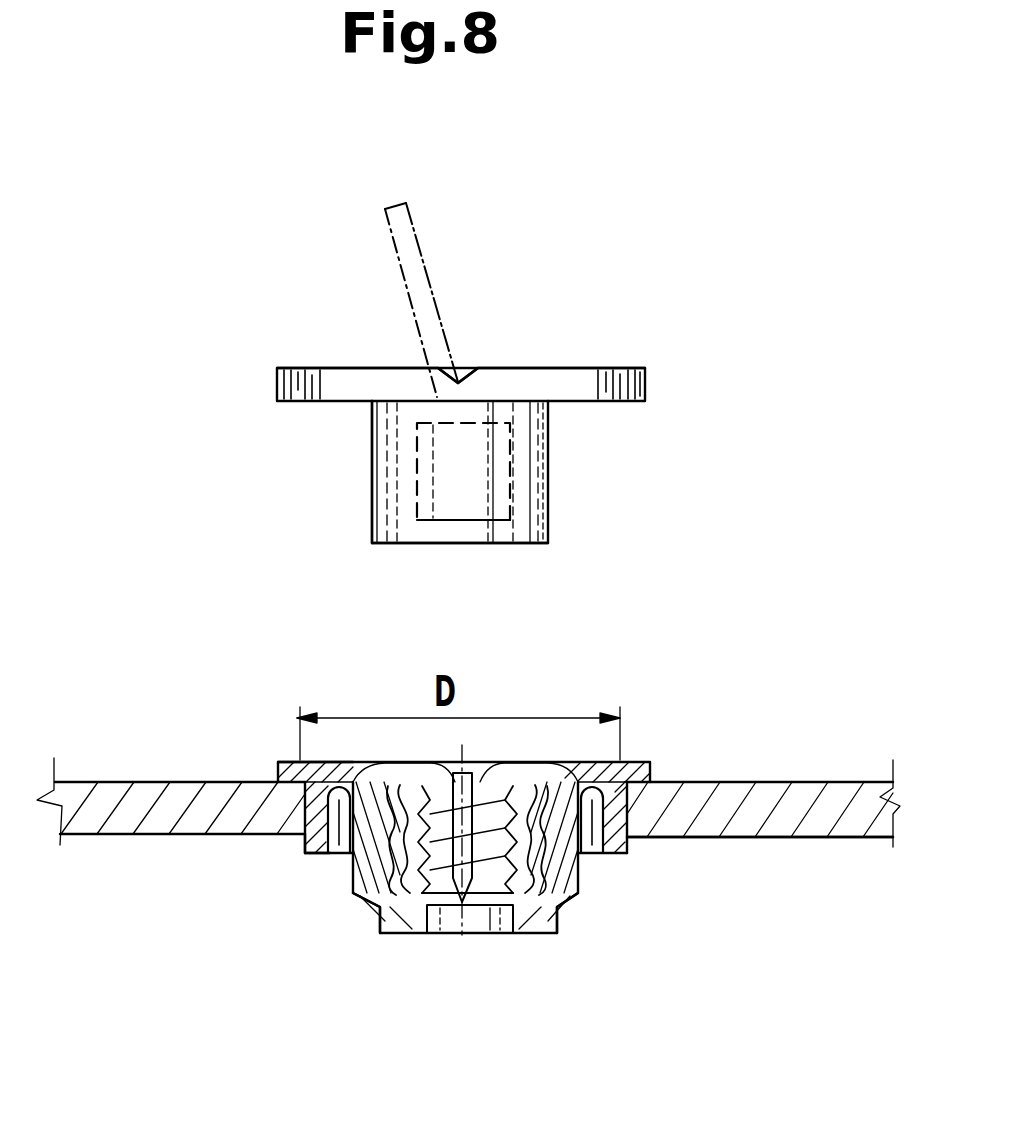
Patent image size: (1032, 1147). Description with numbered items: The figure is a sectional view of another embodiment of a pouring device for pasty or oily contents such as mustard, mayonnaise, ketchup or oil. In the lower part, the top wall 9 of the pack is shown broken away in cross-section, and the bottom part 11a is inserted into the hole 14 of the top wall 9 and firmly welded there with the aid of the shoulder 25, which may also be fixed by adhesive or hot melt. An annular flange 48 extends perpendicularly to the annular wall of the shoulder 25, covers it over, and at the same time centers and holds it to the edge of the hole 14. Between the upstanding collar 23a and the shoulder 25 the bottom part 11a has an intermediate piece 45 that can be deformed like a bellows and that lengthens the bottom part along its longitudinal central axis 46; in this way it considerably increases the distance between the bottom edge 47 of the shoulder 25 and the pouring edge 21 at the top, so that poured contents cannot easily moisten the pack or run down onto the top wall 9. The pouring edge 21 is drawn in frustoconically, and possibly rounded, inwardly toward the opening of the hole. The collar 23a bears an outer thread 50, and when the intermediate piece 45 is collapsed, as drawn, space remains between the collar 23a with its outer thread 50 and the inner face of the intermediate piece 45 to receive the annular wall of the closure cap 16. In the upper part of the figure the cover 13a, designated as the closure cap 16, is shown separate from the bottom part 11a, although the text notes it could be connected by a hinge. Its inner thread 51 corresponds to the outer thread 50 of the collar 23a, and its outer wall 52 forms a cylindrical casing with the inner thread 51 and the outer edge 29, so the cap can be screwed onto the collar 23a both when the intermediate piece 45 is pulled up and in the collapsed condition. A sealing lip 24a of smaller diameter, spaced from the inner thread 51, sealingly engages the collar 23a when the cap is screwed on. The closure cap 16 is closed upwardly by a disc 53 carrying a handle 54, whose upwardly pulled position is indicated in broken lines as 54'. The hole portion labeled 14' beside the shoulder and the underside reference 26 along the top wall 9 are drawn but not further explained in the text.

The top wall 9 is at (760, 795).
The bottom part 11a is at (353, 895).
The cover 13a is at (618, 307).
The hole 14 is at (555, 864).
The outer sleeve portion of the nut 14' is at (600, 979).
The closure cap 16 is at (460, 472).
The pouring edge 21 is at (400, 785).
The collar 23a is at (498, 935).
The sealing lip 24a is at (495, 512).
The shoulder 25 is at (305, 838).
The underside of the panel 26 is at (813, 838).
The outer edge 29 is at (493, 523).
The intermediate piece 45 is at (330, 855).
The longitudinal central axis 46 is at (465, 935).
The bottom edge 47 is at (604, 853).
The annular flange 48 is at (623, 768).
The outer thread 50 is at (280, 762).
The inner thread 51 is at (392, 517).
The outer wall 52 is at (372, 438).
The disc 53 is at (495, 380).
The handle 54 is at (525, 353).
The handle in upwardly pulled position 54' is at (310, 295).